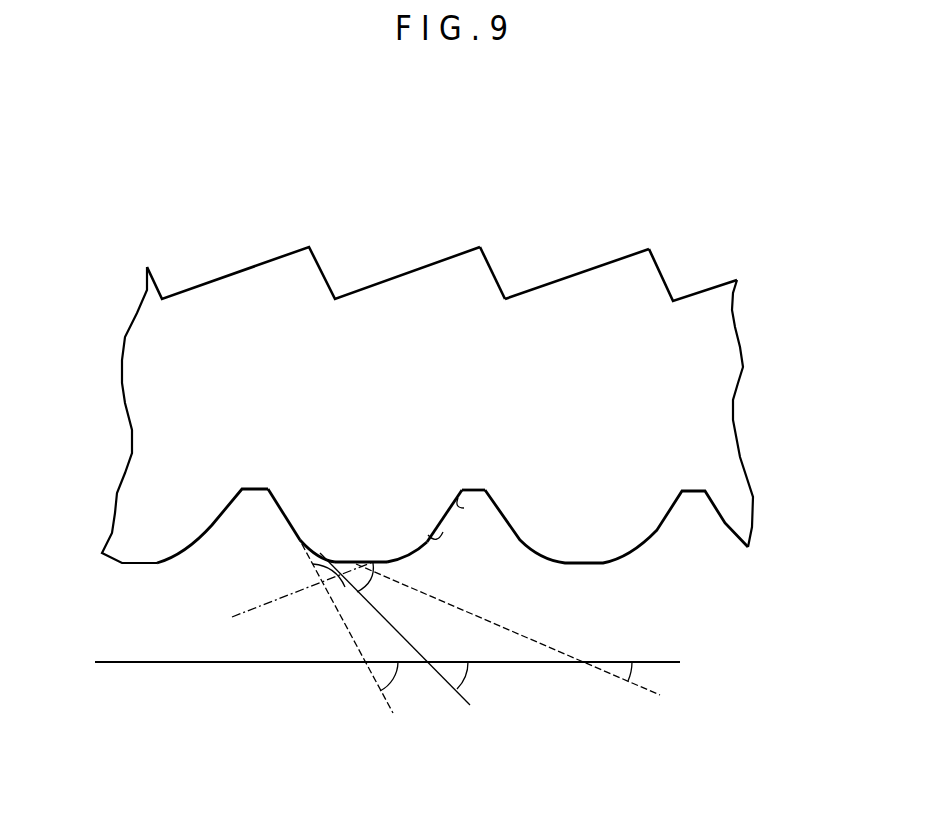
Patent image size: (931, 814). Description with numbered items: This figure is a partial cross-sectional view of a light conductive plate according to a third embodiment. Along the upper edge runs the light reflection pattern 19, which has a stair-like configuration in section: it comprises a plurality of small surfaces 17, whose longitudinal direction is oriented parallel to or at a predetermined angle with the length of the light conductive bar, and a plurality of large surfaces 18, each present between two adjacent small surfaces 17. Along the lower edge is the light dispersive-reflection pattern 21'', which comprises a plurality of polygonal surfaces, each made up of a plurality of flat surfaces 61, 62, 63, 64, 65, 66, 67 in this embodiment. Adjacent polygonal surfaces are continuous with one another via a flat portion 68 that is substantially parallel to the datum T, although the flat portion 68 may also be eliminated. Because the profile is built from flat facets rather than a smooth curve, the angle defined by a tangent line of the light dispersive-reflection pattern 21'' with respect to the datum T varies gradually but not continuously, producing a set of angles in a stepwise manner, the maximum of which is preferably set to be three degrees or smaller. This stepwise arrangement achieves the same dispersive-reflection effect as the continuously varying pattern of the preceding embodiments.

The small surfaces 17 is at (494, 272).
The large surfaces 18 is at (598, 267).
The light reflection pattern 19 is at (442, 195).
The light dispersive-reflection pattern 21'' is at (463, 516).
The flat surface 61 is at (276, 508).
The flat surface 62 is at (300, 537).
The flat surface 63 is at (332, 570).
The flat surface 64 is at (365, 585).
The flat surface 65 is at (408, 557).
The flat surface 66 is at (437, 525).
The flat surface 67 is at (462, 488).
The flat portion 68 is at (478, 488).
The datum T is at (371, 662).